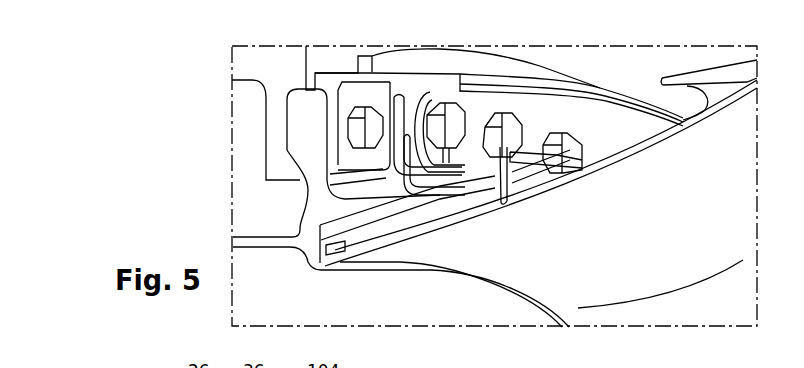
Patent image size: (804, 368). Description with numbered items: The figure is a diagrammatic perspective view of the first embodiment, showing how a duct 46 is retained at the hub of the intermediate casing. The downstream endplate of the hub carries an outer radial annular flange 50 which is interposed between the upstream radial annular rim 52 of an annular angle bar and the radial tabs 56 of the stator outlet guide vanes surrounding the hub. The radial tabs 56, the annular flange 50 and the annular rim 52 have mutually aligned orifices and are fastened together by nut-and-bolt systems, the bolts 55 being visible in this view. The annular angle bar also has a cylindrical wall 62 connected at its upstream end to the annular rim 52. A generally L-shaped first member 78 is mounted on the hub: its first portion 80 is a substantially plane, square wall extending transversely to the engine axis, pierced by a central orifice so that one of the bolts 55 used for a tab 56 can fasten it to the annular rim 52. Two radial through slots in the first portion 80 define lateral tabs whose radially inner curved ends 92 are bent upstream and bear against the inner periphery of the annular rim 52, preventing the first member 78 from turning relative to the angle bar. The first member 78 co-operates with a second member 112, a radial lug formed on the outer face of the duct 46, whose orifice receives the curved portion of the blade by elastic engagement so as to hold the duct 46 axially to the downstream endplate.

The duct 46 is at (692, 300).
The outer radial annular flange 50 is at (305, 138).
The upstream radial annular rim 52 is at (332, 113).
The bolts 55 is at (360, 108).
The radial tabs 56 is at (278, 95).
The cylindrical wall 62 is at (438, 85).
The first member 78 is at (437, 212).
The first portion 80 is at (392, 90).
The curved ends 92 is at (386, 200).
The second member 112 is at (520, 200).